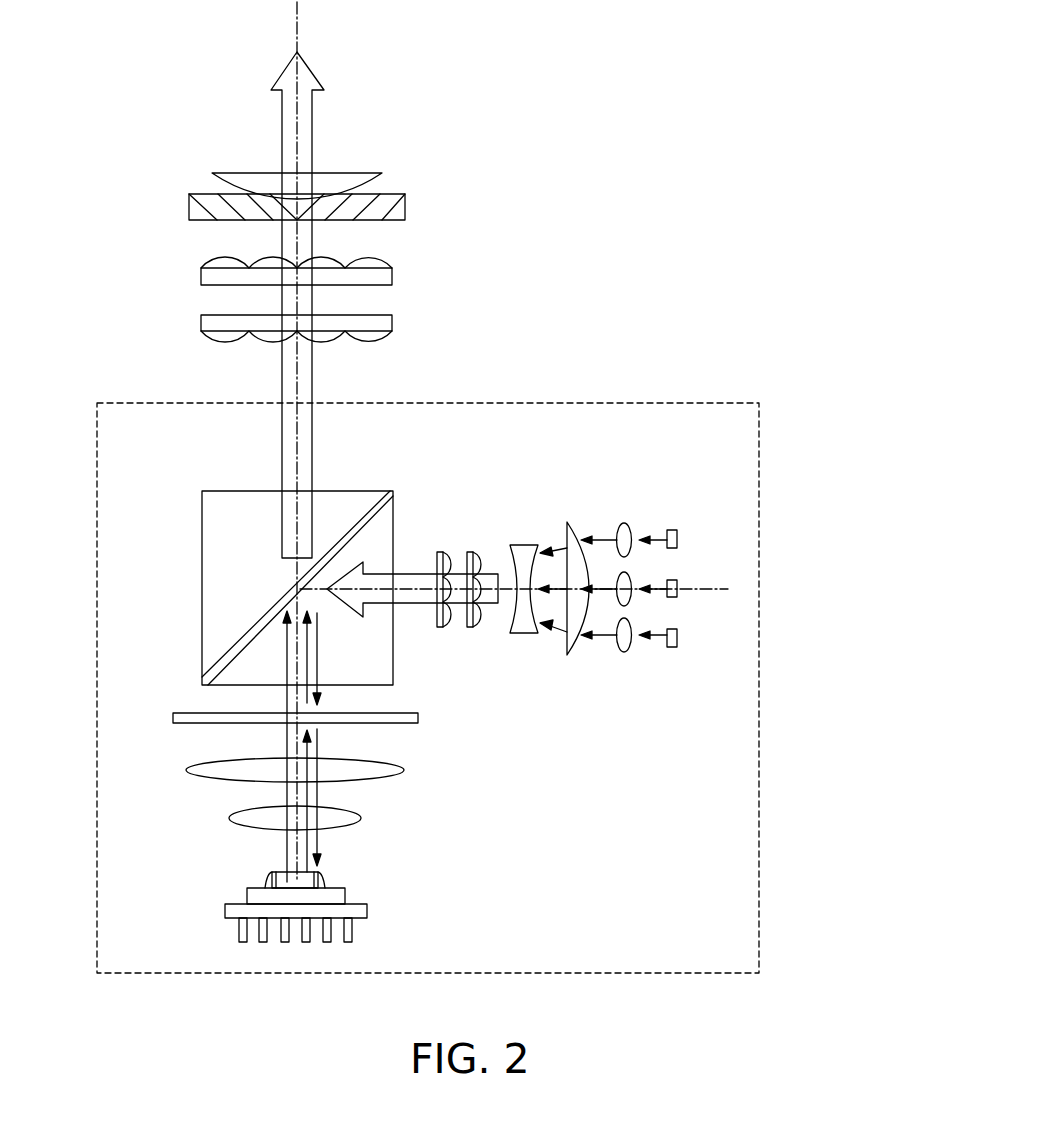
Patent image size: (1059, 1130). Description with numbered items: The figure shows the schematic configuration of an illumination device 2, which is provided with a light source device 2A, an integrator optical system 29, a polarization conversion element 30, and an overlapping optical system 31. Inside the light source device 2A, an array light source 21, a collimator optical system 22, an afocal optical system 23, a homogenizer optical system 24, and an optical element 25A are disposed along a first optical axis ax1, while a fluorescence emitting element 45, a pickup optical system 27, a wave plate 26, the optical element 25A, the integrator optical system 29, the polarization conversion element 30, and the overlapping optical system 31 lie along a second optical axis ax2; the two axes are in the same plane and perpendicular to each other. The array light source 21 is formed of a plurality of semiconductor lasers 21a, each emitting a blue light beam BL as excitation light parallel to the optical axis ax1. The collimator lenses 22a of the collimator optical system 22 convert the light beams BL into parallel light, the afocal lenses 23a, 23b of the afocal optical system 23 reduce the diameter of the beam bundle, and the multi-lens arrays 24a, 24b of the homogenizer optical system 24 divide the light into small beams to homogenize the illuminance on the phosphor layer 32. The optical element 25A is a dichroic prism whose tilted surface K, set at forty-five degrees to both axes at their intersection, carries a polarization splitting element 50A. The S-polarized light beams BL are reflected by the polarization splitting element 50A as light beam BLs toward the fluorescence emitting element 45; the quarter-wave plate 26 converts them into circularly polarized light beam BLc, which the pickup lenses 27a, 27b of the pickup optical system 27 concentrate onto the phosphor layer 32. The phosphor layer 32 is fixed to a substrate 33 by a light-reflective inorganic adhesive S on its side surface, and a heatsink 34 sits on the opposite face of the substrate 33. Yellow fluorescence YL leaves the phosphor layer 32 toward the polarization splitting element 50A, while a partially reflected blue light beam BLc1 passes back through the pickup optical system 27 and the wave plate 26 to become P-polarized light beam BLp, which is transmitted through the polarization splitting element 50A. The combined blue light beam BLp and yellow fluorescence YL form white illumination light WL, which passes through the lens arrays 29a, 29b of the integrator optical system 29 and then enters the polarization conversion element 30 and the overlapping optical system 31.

The illumination device 2 is at (699, 95).
The light source device 2A is at (759, 446).
The array light source 21 is at (673, 512).
The semiconductor laser 21a is at (670, 647).
The collimator optical system 22 is at (627, 508).
The collimator lens 22a is at (625, 657).
The afocal optical system 23 is at (605, 471).
The afocal lens 23a is at (580, 522).
The afocal lens 23b is at (527, 545).
The homogenizer optical system 24 is at (507, 504).
The multi-lens array 24a is at (470, 552).
The multi-lens array 24b is at (440, 552).
The optical element 25A is at (202, 521).
The polarization splitting element 50A is at (282, 602).
The tilted surface K is at (267, 618).
The wave plate 26 is at (418, 720).
The pickup optical system 27 is at (496, 765).
The pickup lens 27a is at (404, 768).
The pickup lens 27b is at (361, 820).
The integrator optical system 29 is at (476, 263).
The lens array 29a is at (392, 323).
The lens array 29b is at (392, 275).
The polarization conversion element 30 is at (405, 205).
The overlapping optical system 31 is at (380, 163).
The phosphor layer 32 is at (275, 882).
The substrate 33 is at (250, 897).
The heatsink 34 is at (227, 910).
The fluorescence emitting element 45 is at (406, 898).
The inorganic adhesive S is at (323, 883).
The blue light beam BL is at (413, 608).
The S-polarized light beam BLs is at (317, 657).
The P-polarized light beam BLp is at (295, 668).
The circularly polarized light beam BLc is at (320, 742).
The reflected blue light beam BLc1 is at (303, 738).
The yellow fluorescence YL is at (290, 657).
The illumination light WL is at (282, 105).
The optical axis ax1 is at (712, 585).
The optical axis ax2 is at (299, 20).